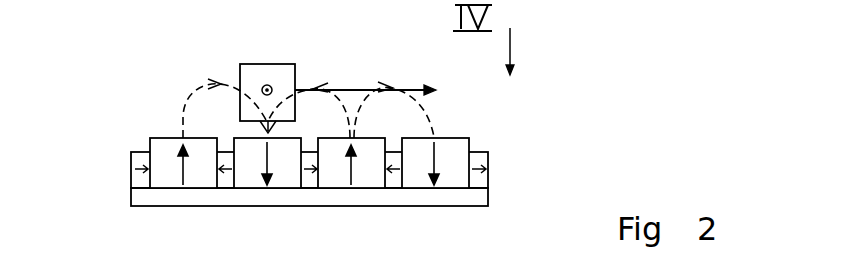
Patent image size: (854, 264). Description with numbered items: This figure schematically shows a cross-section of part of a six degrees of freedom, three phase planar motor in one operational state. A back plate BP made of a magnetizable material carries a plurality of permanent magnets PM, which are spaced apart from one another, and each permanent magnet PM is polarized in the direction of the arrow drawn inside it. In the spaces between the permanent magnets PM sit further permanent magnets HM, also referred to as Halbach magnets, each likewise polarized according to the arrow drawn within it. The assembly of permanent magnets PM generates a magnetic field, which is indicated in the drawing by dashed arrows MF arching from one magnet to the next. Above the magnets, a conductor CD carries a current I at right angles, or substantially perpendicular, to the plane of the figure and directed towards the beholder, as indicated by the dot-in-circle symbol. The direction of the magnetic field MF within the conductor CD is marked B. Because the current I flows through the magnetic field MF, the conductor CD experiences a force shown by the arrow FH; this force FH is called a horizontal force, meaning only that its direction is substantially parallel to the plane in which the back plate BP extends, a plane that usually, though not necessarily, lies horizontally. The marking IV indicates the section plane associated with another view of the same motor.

The back plate BP is at (482, 197).
The permanent magnets (Halbach magnets) HM is at (487, 157).
The permanent magnets PM is at (460, 145).
The magnetic field MF is at (183, 118).
The direction of the magnetic field B is at (264, 118).
The conductor CD is at (250, 68).
The current I is at (267, 84).
The horizontal force FH is at (350, 89).
The section line IV is at (483, 40).